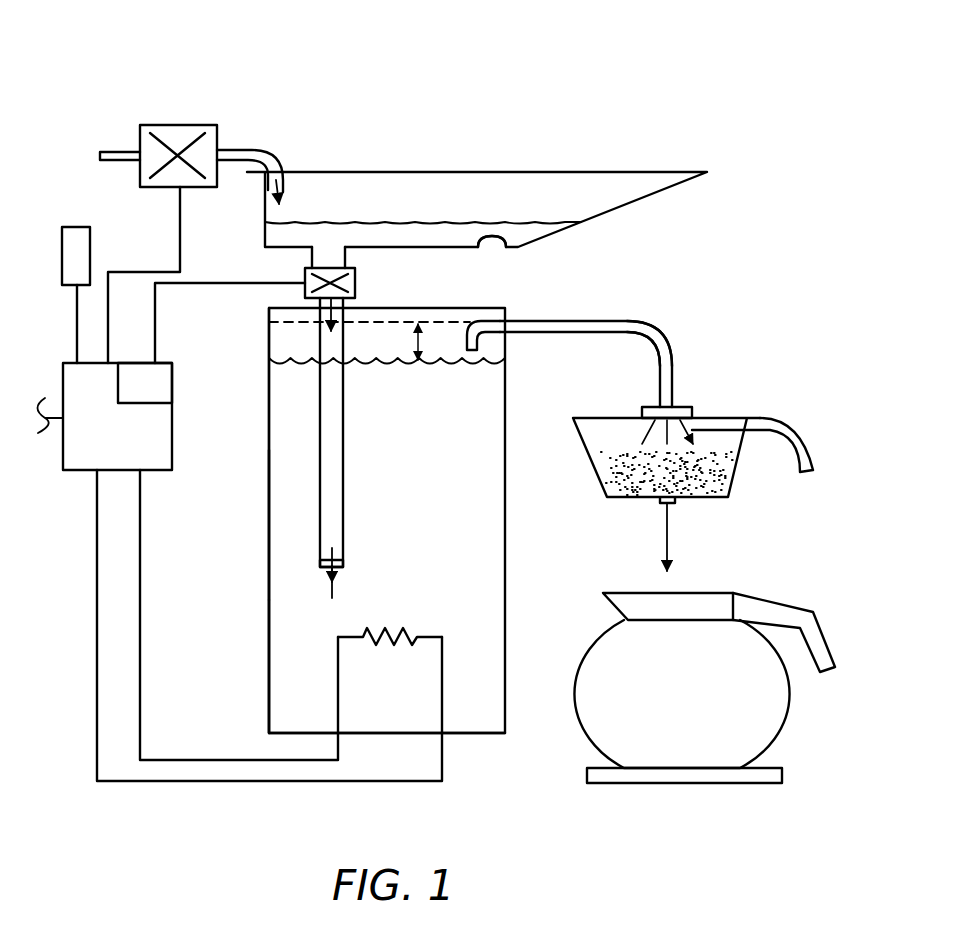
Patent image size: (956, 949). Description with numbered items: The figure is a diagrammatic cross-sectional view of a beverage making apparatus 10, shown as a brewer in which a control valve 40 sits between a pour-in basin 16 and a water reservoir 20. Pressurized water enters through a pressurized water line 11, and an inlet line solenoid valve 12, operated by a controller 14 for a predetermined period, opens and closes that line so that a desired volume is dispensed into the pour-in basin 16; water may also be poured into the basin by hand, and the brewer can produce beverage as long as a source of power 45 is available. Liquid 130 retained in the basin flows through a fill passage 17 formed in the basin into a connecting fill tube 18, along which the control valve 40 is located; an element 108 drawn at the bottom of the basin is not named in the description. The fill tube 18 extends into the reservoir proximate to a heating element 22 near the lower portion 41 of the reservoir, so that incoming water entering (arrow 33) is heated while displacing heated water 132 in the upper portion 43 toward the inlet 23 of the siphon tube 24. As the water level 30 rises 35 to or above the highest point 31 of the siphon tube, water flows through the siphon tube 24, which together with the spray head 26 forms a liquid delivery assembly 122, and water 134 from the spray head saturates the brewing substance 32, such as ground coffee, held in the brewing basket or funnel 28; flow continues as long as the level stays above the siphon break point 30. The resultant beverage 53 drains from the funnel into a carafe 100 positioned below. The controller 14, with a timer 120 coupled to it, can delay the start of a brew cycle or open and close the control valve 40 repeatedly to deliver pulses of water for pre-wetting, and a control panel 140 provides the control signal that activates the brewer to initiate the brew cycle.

The beverage making apparatus 10 is at (483, 90).
The pressurized water line 11 is at (80, 153).
The inlet line solenoid valve 12 is at (182, 121).
The controller 14 is at (78, 472).
The pour-in basin 16 is at (621, 150).
The fill passage 17 is at (328, 255).
The connecting fill tube 18 is at (312, 258).
The water reservoir 20 is at (507, 566).
The heating element 22 is at (442, 682).
The inlet of siphon tube 23 is at (470, 356).
The siphon tube 24 is at (663, 336).
The spray head 26 is at (689, 403).
The brewing basket 28 is at (723, 505).
The water level 30 is at (512, 360).
The highest point of siphon tube 31 is at (270, 322).
The brewing substance 32 is at (620, 482).
The arrow indicating water entering 33 is at (345, 578).
The rise of water level 35 is at (416, 340).
The control valve 40 is at (360, 288).
The lower portion of water reservoir 41 is at (282, 668).
The upper portion of water reservoir 43 is at (278, 398).
The source of power 45 is at (46, 403).
The resultant beverage 53 is at (672, 505).
The carafe 100 is at (790, 705).
The reservoir drain 108 is at (505, 246).
The timer 120 is at (172, 372).
The liquid delivery assembly 122 is at (700, 343).
The liquid in basin 130 is at (505, 221).
The water in reservoir 132 is at (290, 525).
The water dispensed from spray head 134 is at (738, 430).
The control panel 140 is at (72, 225).